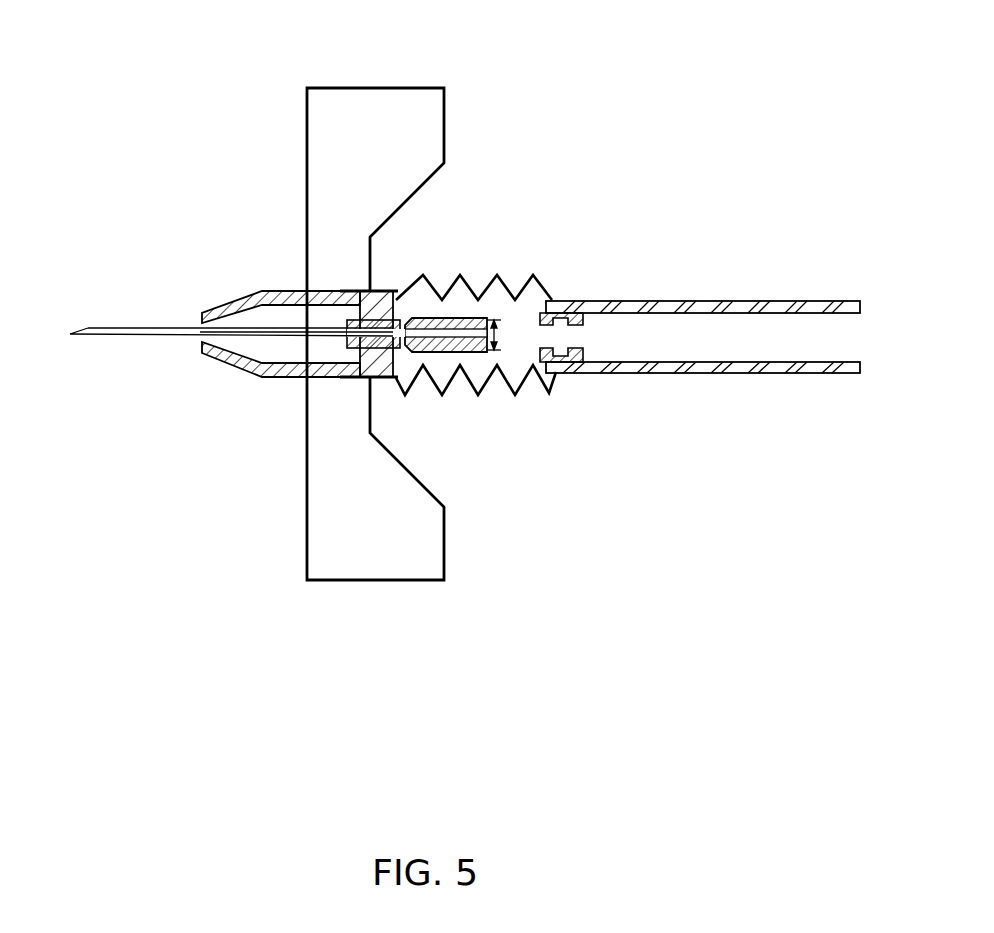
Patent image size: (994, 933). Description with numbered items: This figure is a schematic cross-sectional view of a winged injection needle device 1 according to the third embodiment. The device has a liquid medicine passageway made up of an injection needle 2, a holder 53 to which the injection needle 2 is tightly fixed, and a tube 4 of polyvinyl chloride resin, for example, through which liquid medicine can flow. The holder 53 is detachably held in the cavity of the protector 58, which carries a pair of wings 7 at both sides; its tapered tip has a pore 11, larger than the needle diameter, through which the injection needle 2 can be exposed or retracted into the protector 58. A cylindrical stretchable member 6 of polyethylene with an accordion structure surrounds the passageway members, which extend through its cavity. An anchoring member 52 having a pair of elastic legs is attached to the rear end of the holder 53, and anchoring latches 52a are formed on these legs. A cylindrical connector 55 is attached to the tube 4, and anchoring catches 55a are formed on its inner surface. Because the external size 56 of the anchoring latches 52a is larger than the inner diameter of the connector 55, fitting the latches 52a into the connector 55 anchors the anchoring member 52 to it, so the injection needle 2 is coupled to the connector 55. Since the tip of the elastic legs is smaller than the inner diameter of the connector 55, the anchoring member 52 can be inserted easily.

The winged injection needle device 1 is at (748, 198).
The injection needle 2 is at (98, 337).
The tube 4 is at (762, 375).
The stretchable member 6 is at (546, 298).
The wings 7 is at (433, 105).
The pore 11 is at (201, 343).
The anchoring member 52 is at (428, 306).
The anchoring latches 52a is at (453, 353).
The holder 53 is at (399, 380).
The cylindrical connector 55 is at (575, 362).
The anchoring catches 55a is at (587, 293).
The external size 56 is at (500, 325).
The protector 58 is at (287, 377).